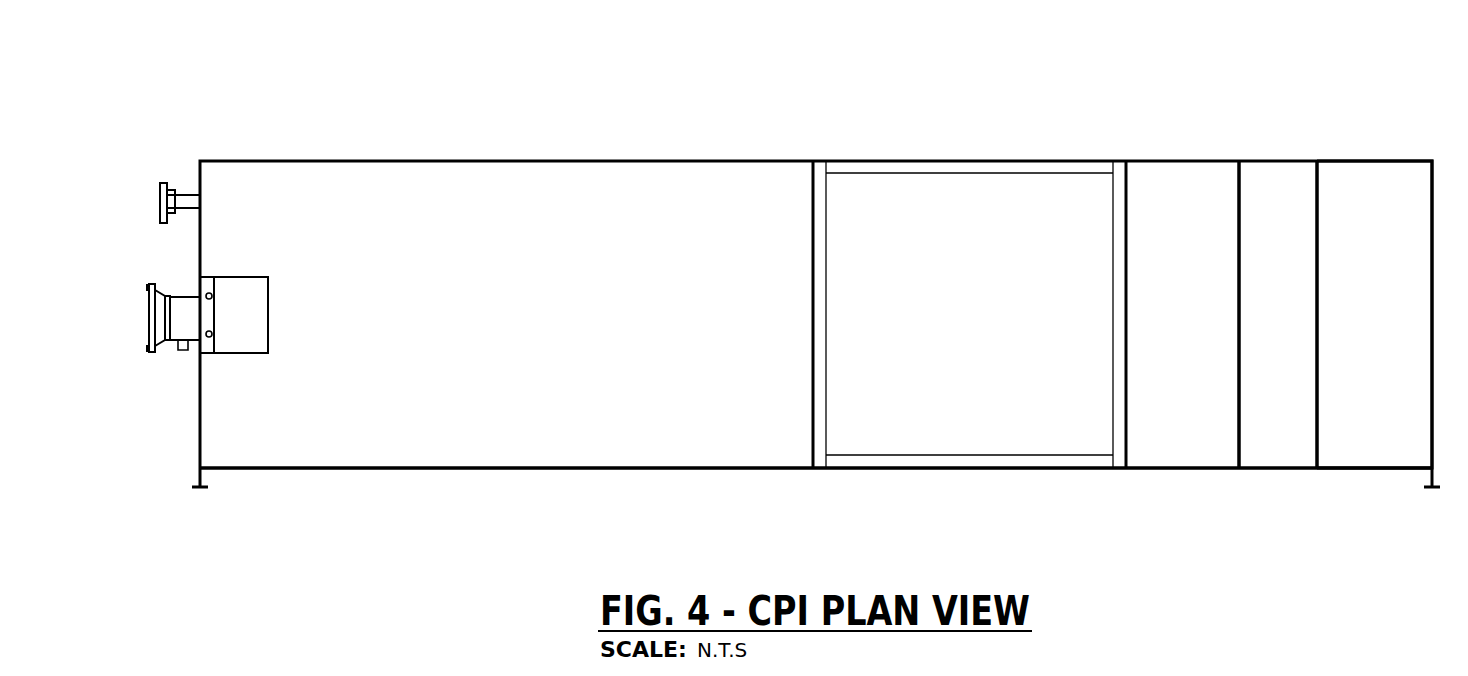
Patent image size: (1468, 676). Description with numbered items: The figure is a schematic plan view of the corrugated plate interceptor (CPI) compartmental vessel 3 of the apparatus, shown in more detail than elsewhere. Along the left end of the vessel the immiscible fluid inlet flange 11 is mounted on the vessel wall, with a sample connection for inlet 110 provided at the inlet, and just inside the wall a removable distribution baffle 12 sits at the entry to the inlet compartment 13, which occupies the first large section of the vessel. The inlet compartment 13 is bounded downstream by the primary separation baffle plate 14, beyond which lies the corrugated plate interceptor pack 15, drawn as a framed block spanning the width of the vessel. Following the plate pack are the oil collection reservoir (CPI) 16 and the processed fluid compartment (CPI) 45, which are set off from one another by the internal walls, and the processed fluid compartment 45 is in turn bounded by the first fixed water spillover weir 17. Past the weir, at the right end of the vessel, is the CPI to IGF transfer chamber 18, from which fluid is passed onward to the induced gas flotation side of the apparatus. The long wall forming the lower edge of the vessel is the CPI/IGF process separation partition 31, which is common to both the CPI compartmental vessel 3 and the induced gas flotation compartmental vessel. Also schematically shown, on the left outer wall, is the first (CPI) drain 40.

The corrugated plate interceptor (CPI) compartmental vessel 3 is at (603, 65).
The immiscible fluid inlet flange 11 is at (150, 360).
The removable distribution baffle 12 is at (276, 207).
The inlet compartment 13 is at (452, 179).
The primary separation baffle plate 14 is at (748, 265).
The corrugated plate interceptor pack 15 is at (969, 258).
The oil collection reservoir (CPI) 16 is at (1154, 265).
The first fixed water spillover weir 17 is at (1254, 265).
The CPI to IGF transfer chamber 18 is at (1374, 367).
The CPI/IGF process separation partition 31 is at (816, 520).
The first (CPI) drain 40 is at (191, 142).
The processed fluid compartment (CPI) 45 is at (1260, 367).
The sample connection for inlet 110 is at (152, 426).